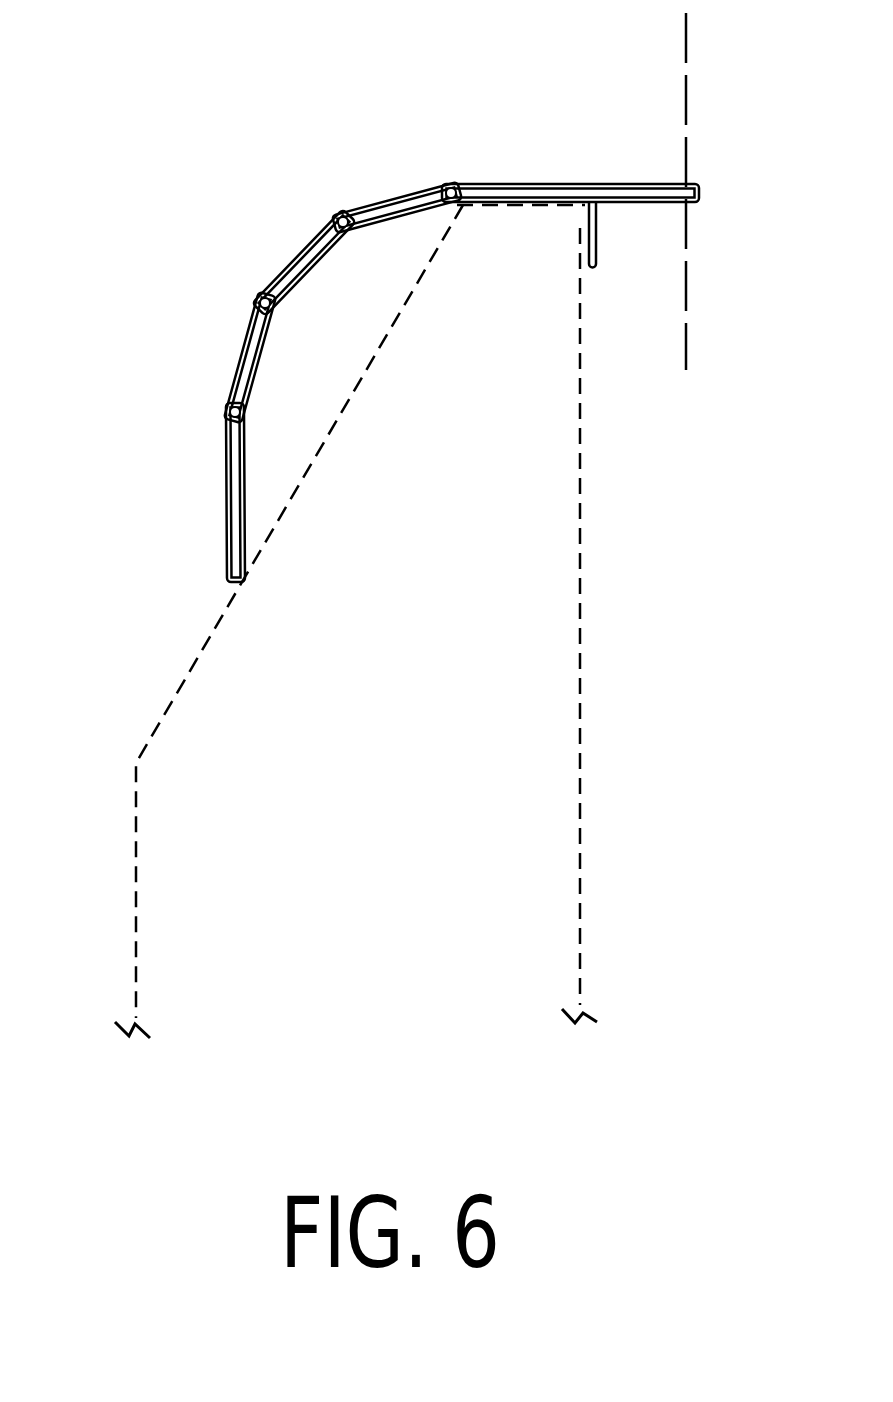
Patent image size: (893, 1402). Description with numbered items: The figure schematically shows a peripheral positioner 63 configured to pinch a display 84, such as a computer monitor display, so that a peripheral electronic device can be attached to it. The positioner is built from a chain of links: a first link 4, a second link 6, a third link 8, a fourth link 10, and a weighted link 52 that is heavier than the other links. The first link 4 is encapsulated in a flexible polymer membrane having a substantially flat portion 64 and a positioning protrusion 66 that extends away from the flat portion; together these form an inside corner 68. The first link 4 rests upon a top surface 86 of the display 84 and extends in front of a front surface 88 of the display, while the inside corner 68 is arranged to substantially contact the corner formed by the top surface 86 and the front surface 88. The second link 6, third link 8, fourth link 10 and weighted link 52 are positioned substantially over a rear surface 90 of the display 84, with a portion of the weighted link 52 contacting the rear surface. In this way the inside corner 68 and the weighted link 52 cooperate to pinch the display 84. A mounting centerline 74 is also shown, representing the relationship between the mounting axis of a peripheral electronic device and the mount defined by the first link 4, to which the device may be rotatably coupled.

The peripheral positioner 63 is at (162, 40).
The mounting centerline 74 is at (686, 110).
The first link 4 is at (540, 195).
The second link 6 is at (417, 202).
The third link 8 is at (313, 258).
The fourth link 10 is at (248, 362).
The weighted link 52 is at (238, 472).
The substantially flat portion 64 is at (458, 208).
The positioning protrusion 66 is at (597, 265).
The top surface 86 is at (522, 212).
The inside corner 68 is at (580, 218).
The rear surface 90 is at (365, 390).
The front surface 88 is at (580, 490).
The display 84 is at (415, 648).